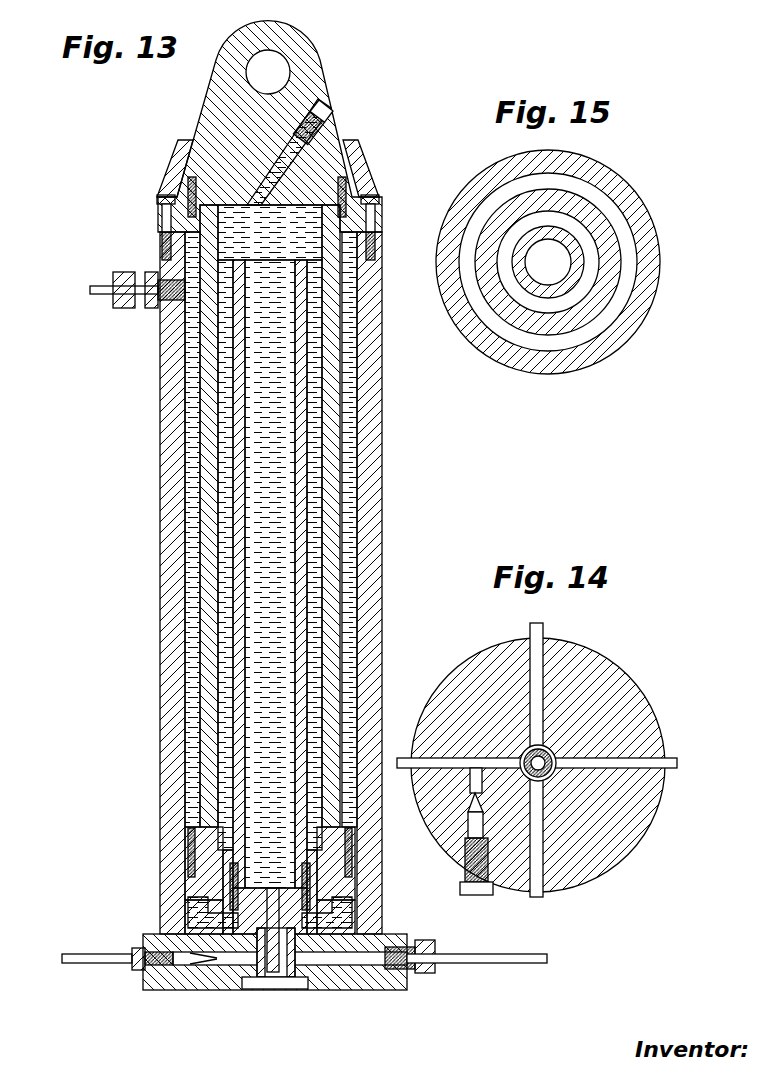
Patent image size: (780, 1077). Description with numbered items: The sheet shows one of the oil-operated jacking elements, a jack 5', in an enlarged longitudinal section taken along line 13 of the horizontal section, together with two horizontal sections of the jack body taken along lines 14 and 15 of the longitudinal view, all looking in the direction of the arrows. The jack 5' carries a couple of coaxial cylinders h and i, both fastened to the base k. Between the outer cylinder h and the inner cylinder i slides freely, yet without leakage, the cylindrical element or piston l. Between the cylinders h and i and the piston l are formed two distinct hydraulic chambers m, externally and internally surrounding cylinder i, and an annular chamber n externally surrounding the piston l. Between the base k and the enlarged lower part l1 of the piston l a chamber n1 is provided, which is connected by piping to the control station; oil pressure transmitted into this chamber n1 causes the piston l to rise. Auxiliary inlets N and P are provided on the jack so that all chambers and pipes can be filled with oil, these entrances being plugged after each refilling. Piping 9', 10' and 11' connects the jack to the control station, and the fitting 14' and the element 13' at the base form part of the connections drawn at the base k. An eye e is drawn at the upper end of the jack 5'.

In FIG. 13, the jack 5' is at (303, 303).
In FIG. 14, the jack 5' is at (538, 748).
In FIG. 15, the jack 5' is at (526, 399).
In FIG. 13, the eye hole e is at (278, 63).
In FIG. 13, the auxiliary inlet N is at (272, 162).
In FIG. 13, the outer coaxial cylinder h is at (370, 463).
In FIG. 15, the outer coaxial cylinder h is at (630, 207).
In FIG. 13, the annular chamber n is at (190, 537).
In FIG. 15, the annular chamber n is at (482, 217).
In FIG. 13, the piston l is at (208, 630).
In FIG. 15, the piston l is at (588, 312).
In FIG. 13, the hydraulic chambers m is at (248, 418).
In FIG. 15, the hydraulic chambers m is at (586, 240).
In FIG. 13, the inner coaxial cylinder i is at (298, 378).
In FIG. 13, the enlarged lower part of piston l1 is at (198, 827).
In FIG. 13, the chamber n1 is at (197, 908).
In FIG. 13, the base k is at (377, 990).
In FIG. 14, the base k is at (630, 853).
In FIG. 13, the auxiliary inlet P is at (180, 963).
In FIG. 14, the auxiliary inlet P is at (472, 827).
In FIG. 13, the piping 11' is at (103, 981).
In FIG. 14, the piping 11' is at (458, 734).
In FIG. 13, the valve assembly 13' is at (275, 963).
In FIG. 13, the piping 9' is at (476, 967).
In FIG. 14, the piping 9' is at (616, 712).
In FIG. 13, the side pipe fitting 14' is at (122, 262).
In FIG. 13, the section line 15- 15 is at (160, 403).
In FIG. 13, the section line 14- 14 is at (310, 965).
In FIG. 14, the piping 10' is at (573, 754).
In FIG. 14, the section line 13- 13 is at (588, 845).